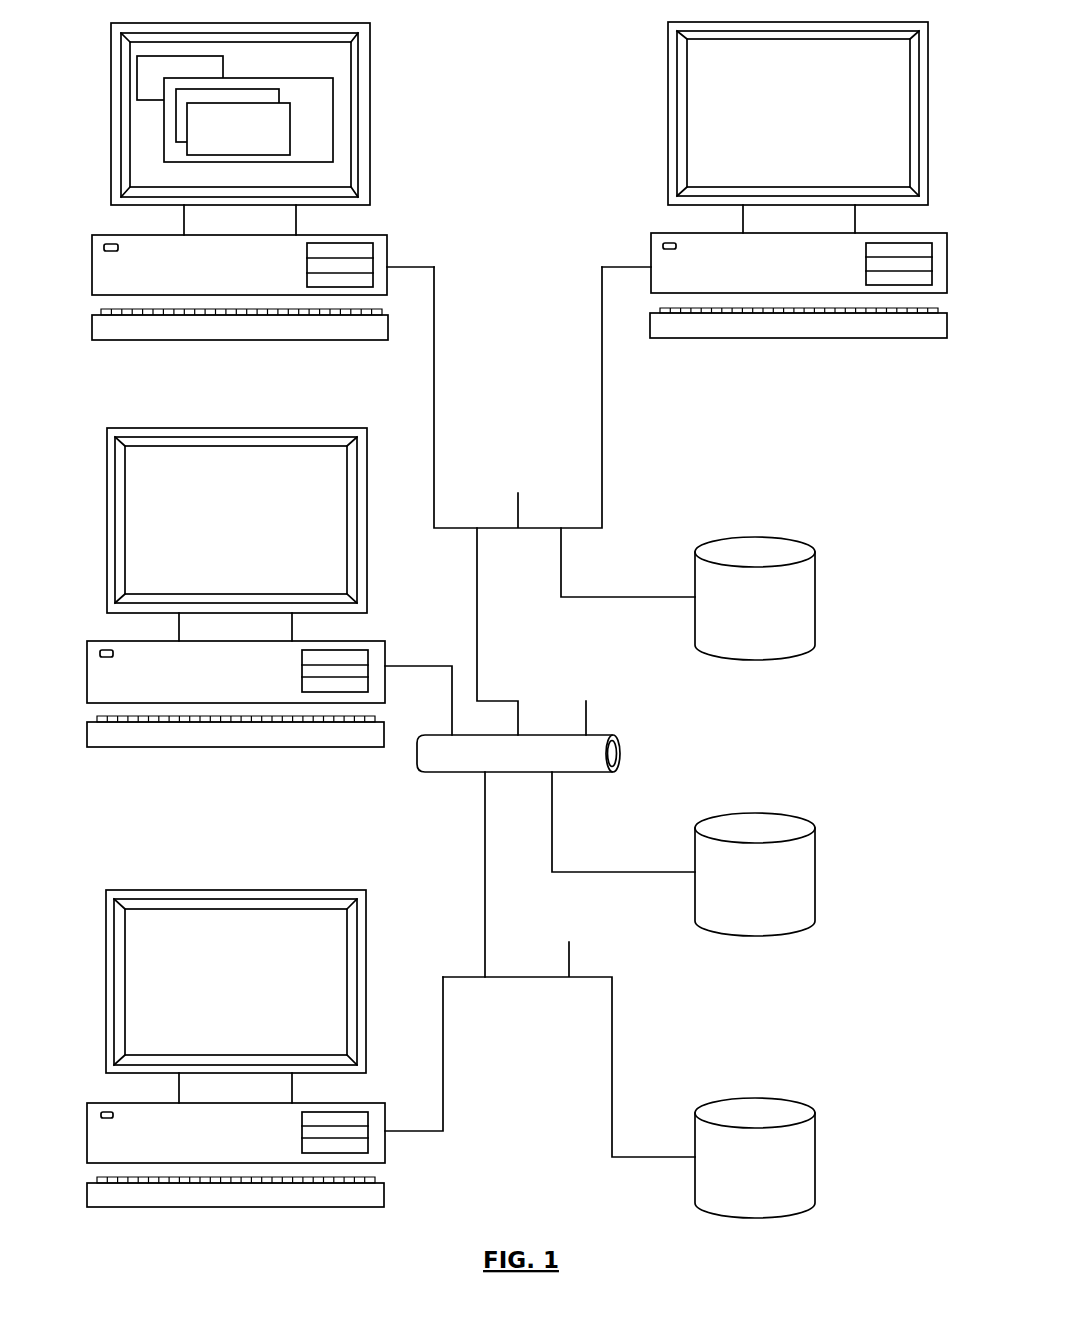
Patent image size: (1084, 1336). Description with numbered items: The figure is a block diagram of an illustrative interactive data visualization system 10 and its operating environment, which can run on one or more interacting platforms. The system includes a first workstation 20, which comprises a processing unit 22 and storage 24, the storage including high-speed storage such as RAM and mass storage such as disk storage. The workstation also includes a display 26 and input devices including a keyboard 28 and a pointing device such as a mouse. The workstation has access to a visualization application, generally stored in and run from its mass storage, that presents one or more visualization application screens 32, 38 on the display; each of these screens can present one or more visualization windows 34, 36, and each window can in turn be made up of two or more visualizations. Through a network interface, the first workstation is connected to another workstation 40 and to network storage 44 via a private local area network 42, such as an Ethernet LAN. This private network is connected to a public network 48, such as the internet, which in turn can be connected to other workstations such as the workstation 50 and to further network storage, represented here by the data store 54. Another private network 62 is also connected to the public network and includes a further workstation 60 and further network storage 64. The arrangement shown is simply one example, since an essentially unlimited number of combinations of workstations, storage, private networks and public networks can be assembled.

The interactive data visualization system 10 is at (148, 1218).
The first workstation 20 is at (373, 75).
The processing unit 22 is at (357, 234).
The storage 24 is at (373, 255).
The display 26 is at (370, 163).
The keyboard 28 is at (350, 340).
The visualization application screen 32 is at (283, 75).
The visualization window 34 is at (177, 128).
The visualization window 36 is at (187, 152).
The visualization application screen 38 is at (223, 75).
The workstation 40 is at (668, 73).
The private local area network 42 is at (537, 527).
The network storage 44 is at (818, 595).
The public network 48 is at (620, 750).
The workstation 50 is at (367, 492).
The data store 54 is at (817, 872).
The workstation 60 is at (367, 955).
The private network 62 is at (587, 976).
The network storage 64 is at (816, 1159).